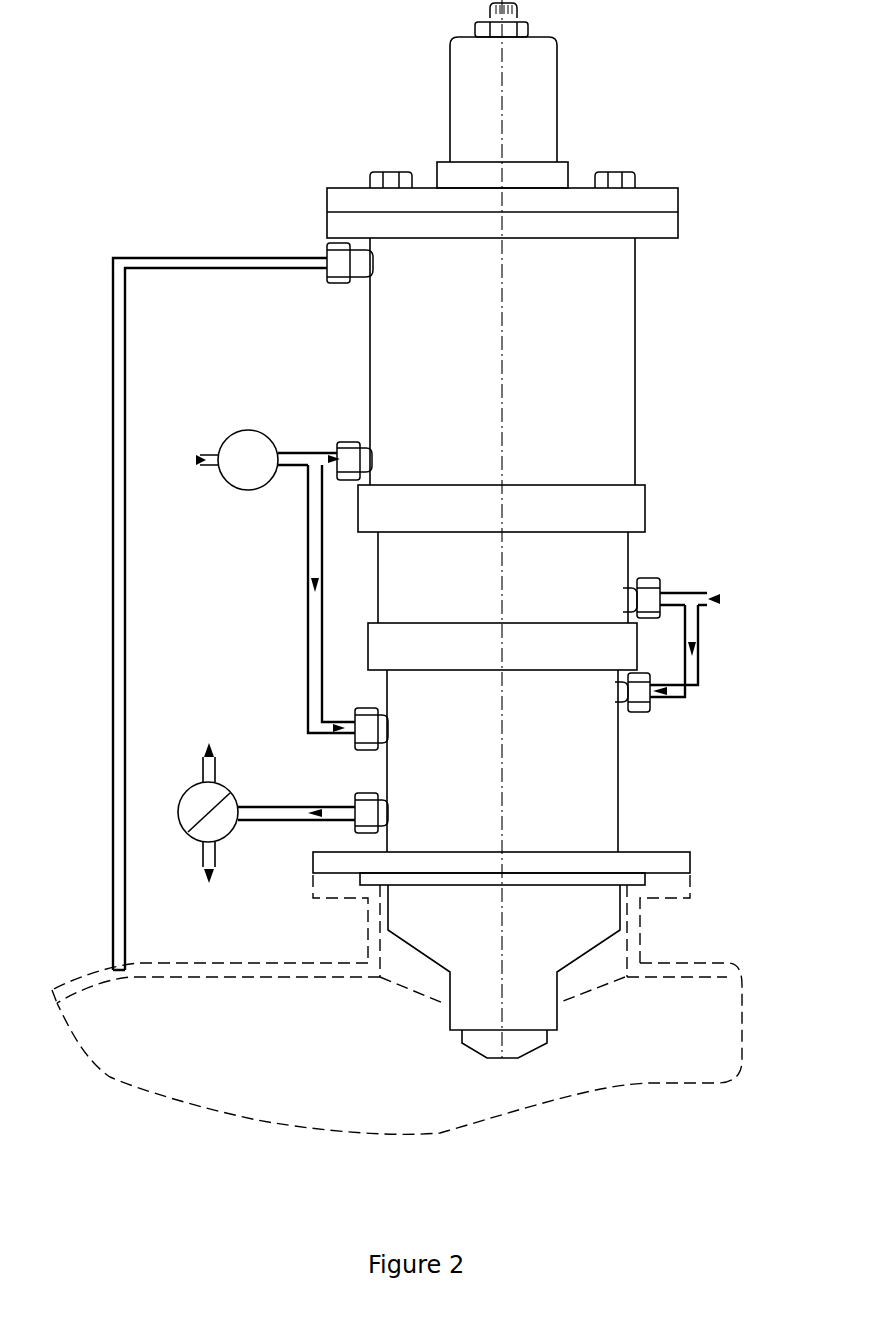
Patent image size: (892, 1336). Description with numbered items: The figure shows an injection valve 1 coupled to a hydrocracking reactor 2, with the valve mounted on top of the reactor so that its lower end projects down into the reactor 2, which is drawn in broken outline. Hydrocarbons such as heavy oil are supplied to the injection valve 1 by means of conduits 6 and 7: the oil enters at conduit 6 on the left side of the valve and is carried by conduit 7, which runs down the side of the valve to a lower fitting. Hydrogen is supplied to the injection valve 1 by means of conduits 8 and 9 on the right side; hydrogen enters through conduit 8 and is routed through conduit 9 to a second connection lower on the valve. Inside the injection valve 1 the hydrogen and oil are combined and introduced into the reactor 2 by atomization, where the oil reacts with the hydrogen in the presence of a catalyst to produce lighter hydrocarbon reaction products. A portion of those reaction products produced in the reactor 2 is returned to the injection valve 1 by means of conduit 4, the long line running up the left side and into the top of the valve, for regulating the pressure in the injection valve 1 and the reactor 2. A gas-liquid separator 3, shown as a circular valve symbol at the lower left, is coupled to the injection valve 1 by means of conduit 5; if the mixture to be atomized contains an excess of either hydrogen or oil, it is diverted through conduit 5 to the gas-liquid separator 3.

The injection valve 1 is at (592, 317).
The hydrocracking reactor 2 is at (610, 1033).
The gas-liquid separator 3 is at (183, 790).
The conduit 4 is at (176, 258).
The conduit 5 is at (262, 820).
The conduit 6 is at (293, 455).
The conduit 7 is at (310, 537).
The conduit 8 is at (700, 592).
The conduit 9 is at (677, 694).